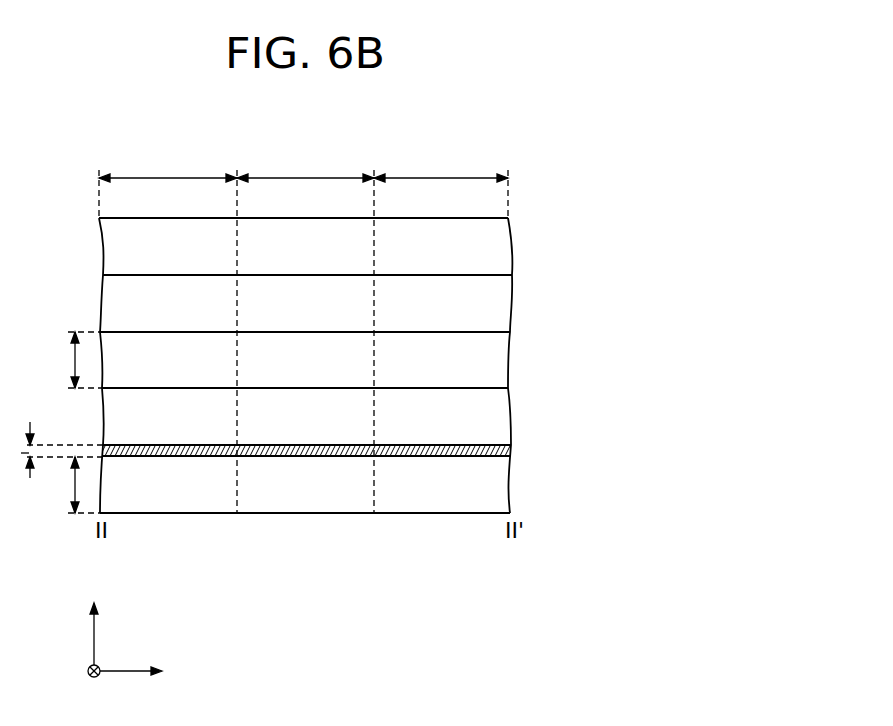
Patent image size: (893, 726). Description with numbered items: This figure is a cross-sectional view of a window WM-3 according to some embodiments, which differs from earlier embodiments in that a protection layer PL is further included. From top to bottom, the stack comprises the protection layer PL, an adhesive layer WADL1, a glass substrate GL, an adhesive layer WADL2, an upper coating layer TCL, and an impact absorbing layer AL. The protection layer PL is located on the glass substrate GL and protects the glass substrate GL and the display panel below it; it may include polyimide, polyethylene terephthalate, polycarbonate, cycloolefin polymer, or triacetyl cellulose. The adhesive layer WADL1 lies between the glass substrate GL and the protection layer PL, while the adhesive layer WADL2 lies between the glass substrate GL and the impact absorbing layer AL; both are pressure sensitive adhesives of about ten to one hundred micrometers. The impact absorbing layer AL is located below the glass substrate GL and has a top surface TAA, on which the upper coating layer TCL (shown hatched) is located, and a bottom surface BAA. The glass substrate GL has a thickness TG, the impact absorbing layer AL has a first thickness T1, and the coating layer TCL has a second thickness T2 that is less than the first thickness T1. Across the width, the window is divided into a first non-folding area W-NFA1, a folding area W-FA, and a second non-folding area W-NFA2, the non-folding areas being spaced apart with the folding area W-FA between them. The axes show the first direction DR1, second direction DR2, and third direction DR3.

The window WM-3 is at (359, 322).
The protection layer PL is at (498, 246).
The adhesive layer WADL1 is at (505, 302).
The glass substrate GL is at (500, 360).
The adhesive layer WADL2 is at (505, 397).
The top surface TAA is at (466, 452).
The upper coating layer TCL is at (505, 452).
The impact absorbing layer AL is at (500, 488).
The bottom surface BAA is at (466, 516).
The first non-folding area W-NFA1 is at (168, 165).
The folding area W-FA is at (305, 165).
The second non-folding area W-NFA2 is at (441, 165).
The thickness of glass substrate TG is at (64, 360).
The first thickness T1 is at (64, 485).
The second thickness T2 is at (17, 450).
The first direction DR1 is at (94, 686).
The second direction DR2 is at (151, 671).
The third direction DR3 is at (94, 621).